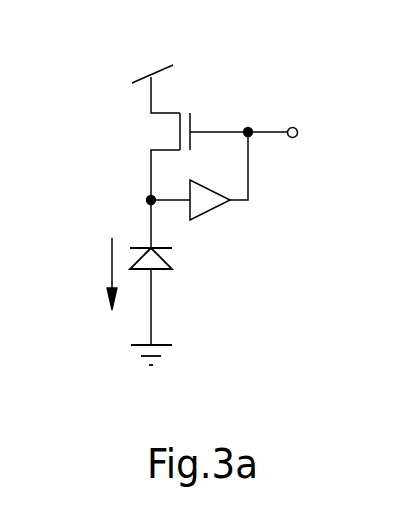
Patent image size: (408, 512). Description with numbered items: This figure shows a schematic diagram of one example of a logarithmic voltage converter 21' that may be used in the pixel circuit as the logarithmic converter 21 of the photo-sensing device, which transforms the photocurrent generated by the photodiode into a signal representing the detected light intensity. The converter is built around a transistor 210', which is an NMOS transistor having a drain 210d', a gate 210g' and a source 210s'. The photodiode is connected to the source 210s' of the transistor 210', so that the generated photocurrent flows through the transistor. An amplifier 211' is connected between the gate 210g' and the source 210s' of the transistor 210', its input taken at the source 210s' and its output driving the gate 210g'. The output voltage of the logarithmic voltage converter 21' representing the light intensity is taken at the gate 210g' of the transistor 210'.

The logarithmic voltage converter 21' is at (176, 190).
The logarithmic converter 21 is at (395, 172).
The transistor 210' is at (159, 111).
The drain 210d' is at (201, 64).
The gate 210g' is at (237, 97).
The source 210s' is at (106, 178).
The amplifier 211' is at (215, 190).